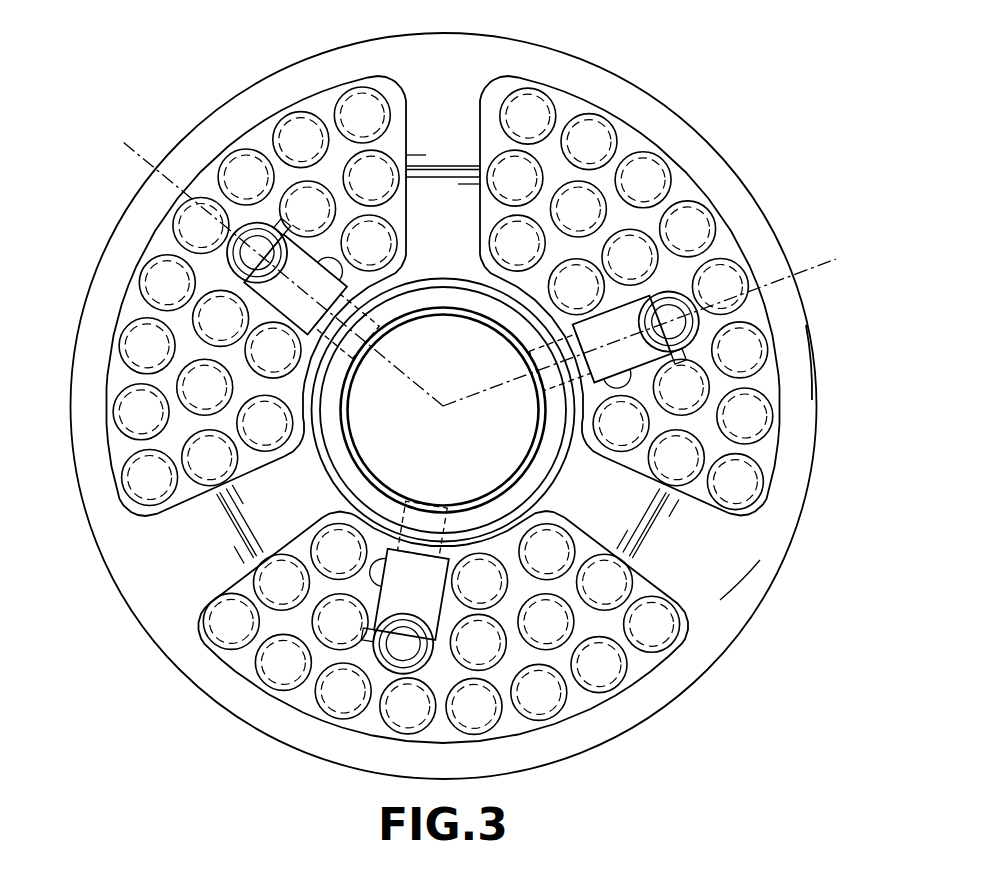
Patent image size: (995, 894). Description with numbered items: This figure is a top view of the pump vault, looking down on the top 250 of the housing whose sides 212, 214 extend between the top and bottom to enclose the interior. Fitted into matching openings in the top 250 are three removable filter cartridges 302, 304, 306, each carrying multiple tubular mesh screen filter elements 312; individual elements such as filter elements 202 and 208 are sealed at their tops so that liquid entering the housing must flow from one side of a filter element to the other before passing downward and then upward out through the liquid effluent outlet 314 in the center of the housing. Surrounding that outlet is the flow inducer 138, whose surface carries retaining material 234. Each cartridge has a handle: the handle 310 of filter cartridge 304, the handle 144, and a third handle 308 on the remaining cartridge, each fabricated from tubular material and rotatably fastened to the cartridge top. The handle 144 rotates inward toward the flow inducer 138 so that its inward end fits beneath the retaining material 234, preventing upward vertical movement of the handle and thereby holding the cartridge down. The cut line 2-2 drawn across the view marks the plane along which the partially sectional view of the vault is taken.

The cut line 2- 2 is at (150, 120).
The flow inducer 138 is at (447, 300).
The handle 144 is at (545, 354).
The filter element 202 is at (243, 178).
The filter element 208 is at (697, 236).
The side of housing 212 is at (808, 325).
The side of housing 214 is at (98, 265).
The retaining material 234 is at (540, 467).
The top of pump vault housing 250 is at (742, 578).
The removable filter cartridge 302 is at (585, 700).
The removable filter cartridge 304 is at (257, 269).
The removable filter cartridge 306 is at (681, 258).
The actuator 308 is at (413, 550).
The handle 310 is at (376, 388).
The tubular mesh screen filter elements 312 is at (525, 112).
The liquid effluent outlet 314 is at (373, 447).